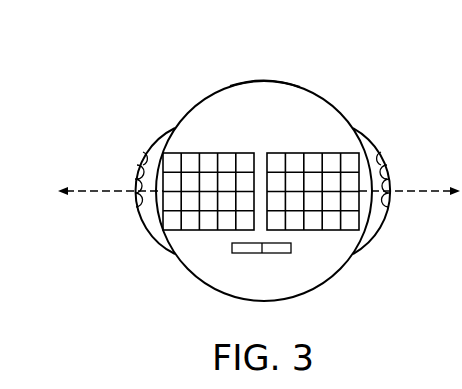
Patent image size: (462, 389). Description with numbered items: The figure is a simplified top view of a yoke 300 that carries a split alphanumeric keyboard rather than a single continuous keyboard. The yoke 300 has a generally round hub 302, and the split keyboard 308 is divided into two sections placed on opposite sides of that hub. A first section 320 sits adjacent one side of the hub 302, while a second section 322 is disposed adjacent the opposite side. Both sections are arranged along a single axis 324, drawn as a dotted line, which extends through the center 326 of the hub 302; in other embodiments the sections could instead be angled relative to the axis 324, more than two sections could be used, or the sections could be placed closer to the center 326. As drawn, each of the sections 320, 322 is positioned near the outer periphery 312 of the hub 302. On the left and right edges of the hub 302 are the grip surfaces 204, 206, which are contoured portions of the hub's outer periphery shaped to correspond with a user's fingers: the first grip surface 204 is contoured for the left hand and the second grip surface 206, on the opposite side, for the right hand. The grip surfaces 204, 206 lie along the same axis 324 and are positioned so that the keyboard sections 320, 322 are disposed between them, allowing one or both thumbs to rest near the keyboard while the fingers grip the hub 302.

The yoke 300 is at (352, 72).
The hub 302 is at (336, 109).
The split keyboard 308 is at (270, 117).
The outer periphery 312 is at (227, 86).
The first section 320 is at (198, 152).
The second section 322 is at (313, 230).
The center 326 is at (262, 194).
The first grip surface 204 is at (136, 174).
The second grip surface 206 is at (389, 174).
The axis 324 is at (431, 193).